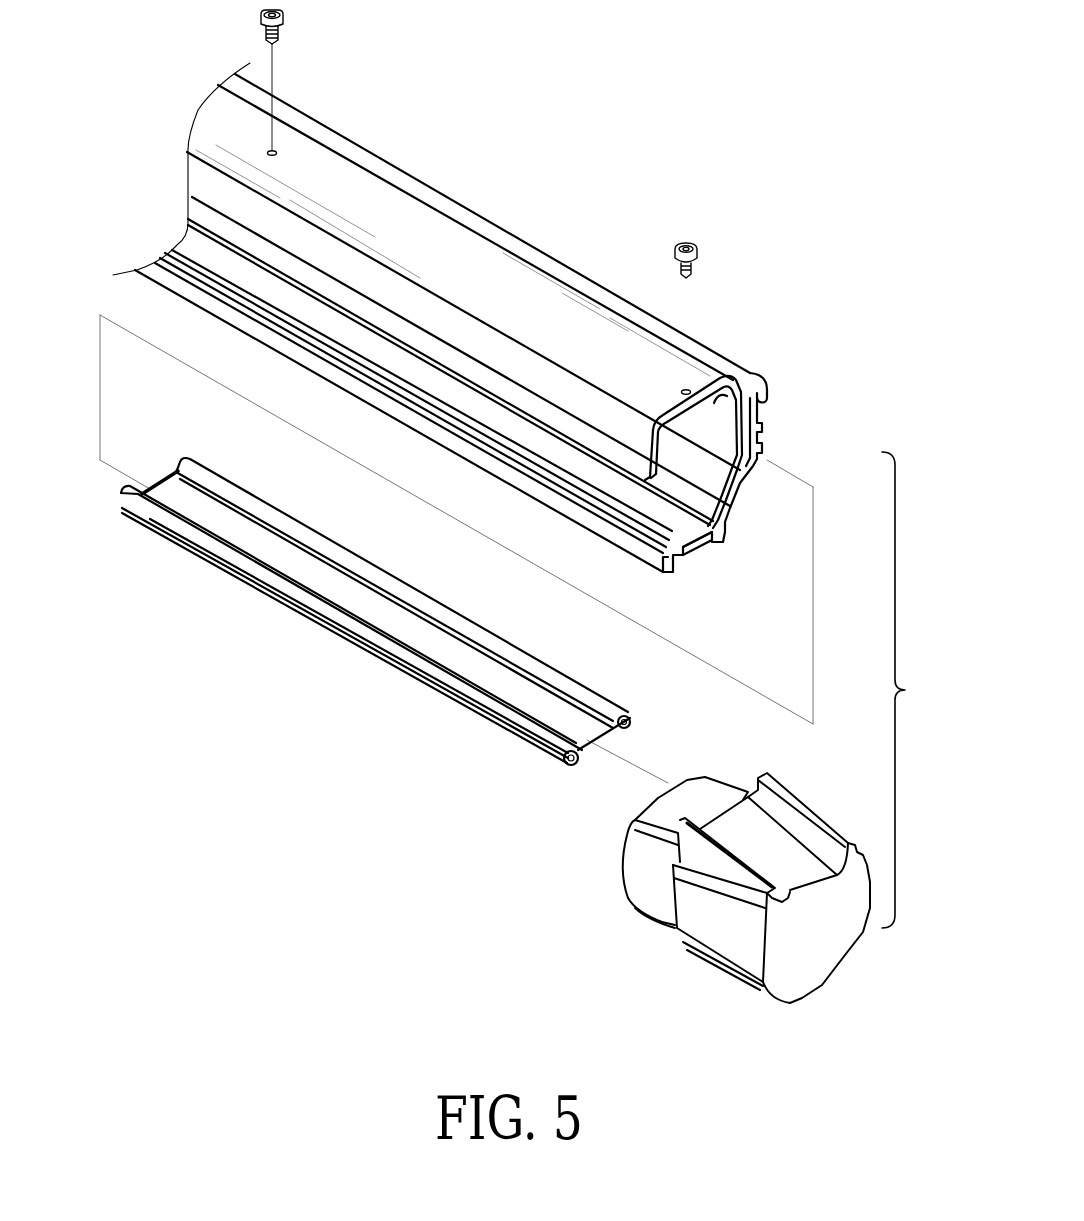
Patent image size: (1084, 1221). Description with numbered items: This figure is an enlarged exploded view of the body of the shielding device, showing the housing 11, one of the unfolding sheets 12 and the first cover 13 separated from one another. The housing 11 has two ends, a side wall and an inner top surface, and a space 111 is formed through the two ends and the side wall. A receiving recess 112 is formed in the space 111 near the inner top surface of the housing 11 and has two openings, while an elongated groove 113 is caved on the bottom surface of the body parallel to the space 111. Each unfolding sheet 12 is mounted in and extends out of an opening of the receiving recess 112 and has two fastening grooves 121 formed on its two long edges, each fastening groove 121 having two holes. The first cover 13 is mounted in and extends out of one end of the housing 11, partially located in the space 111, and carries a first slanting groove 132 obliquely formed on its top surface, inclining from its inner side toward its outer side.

The housing 11 is at (475, 331).
The space 111 is at (713, 478).
The receiving recess 112 is at (718, 401).
The elongated groove 113 is at (687, 547).
The unfolding sheet 12 is at (415, 632).
The fastening groove 121 is at (633, 727).
The first cover 13 is at (749, 898).
The first slanting groove 132 is at (755, 833).